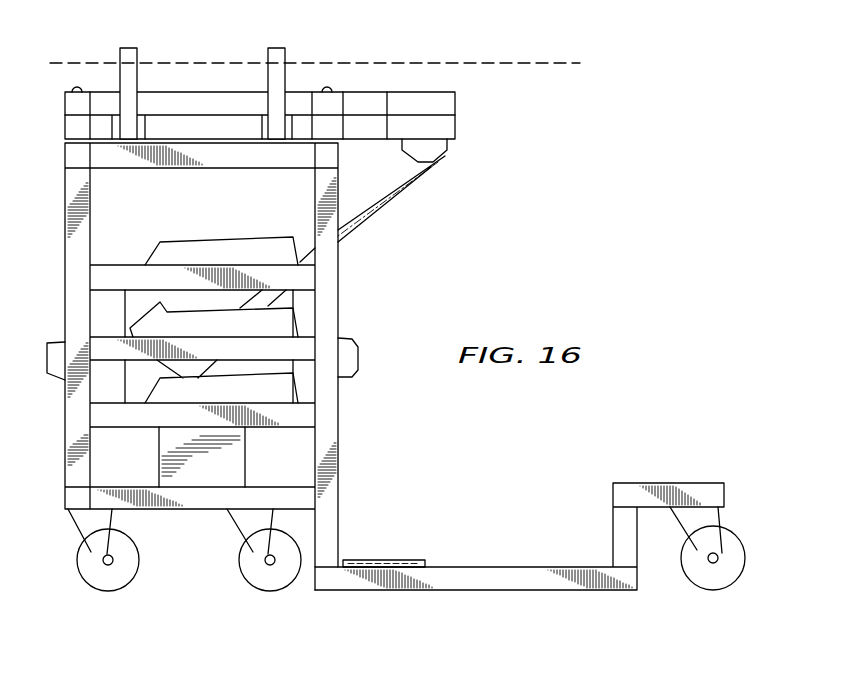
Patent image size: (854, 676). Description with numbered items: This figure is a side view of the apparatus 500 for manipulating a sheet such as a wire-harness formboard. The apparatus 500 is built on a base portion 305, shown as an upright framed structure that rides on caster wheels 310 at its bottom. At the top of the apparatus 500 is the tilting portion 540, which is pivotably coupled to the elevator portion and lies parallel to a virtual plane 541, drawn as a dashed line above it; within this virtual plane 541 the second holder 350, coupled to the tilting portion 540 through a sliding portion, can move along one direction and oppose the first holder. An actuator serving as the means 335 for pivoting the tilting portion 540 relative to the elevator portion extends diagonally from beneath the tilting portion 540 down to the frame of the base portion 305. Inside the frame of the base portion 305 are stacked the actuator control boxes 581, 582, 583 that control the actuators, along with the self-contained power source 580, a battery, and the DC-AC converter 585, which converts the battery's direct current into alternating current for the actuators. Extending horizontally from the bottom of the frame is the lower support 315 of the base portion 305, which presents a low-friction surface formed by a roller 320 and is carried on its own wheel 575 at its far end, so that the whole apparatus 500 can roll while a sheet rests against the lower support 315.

The apparatus 500 is at (547, 228).
The tilting portion 540 is at (165, 102).
The second holder 350 is at (130, 57).
The virtual plane 541 is at (503, 64).
The base portion 305 is at (75, 262).
The self-contained power source 580 is at (137, 303).
The actuator control box 581 is at (190, 243).
The actuator control box 582 is at (283, 319).
The actuator control box 583 is at (278, 388).
The DC-AC converter 585 is at (198, 475).
The means for pivoting 335 is at (400, 188).
The wheels 310 is at (100, 577).
The lower support 315 is at (485, 580).
The roller 320 is at (390, 560).
The wheel 575 is at (727, 575).